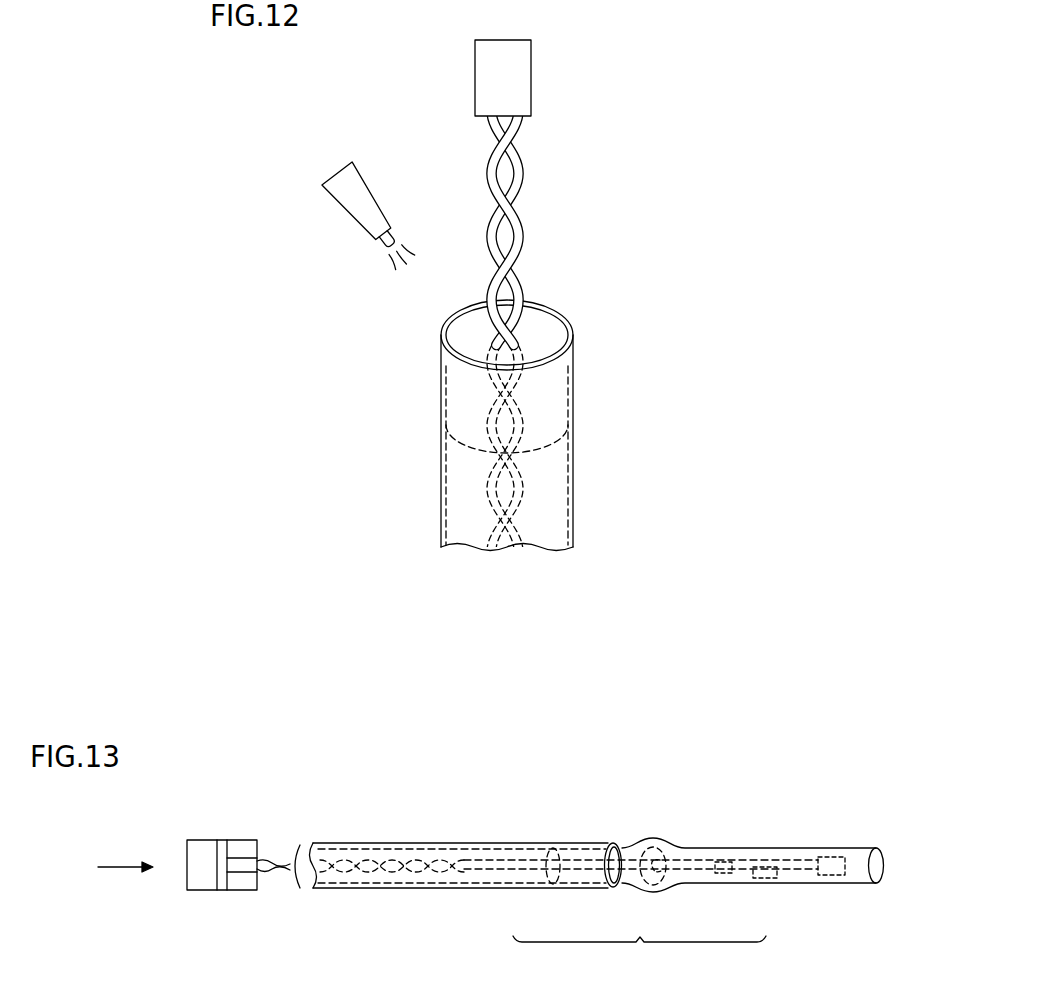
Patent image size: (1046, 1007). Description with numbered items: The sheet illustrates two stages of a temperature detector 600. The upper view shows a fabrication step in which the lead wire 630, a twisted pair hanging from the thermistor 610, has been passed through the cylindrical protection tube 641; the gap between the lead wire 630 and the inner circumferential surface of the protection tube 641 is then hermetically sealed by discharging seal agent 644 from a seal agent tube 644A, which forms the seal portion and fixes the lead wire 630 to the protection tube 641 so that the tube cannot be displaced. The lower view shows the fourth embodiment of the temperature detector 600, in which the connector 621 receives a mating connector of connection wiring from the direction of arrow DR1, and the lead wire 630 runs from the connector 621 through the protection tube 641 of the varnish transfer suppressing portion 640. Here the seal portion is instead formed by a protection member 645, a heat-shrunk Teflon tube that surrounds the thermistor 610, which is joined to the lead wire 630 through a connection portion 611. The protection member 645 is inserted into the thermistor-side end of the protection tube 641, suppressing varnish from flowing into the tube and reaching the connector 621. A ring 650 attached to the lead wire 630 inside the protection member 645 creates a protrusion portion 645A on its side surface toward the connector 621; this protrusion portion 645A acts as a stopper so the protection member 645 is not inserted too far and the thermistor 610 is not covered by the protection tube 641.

In FIG. 13, the temperature detector 600 is at (795, 785).
In FIG. 12, the thermistor 610 is at (514, 78).
In FIG. 13, the thermistor 610 is at (767, 866).
In FIG. 13, the connection portion 611 is at (725, 862).
In FIG. 13, the connector 621 is at (200, 880).
In FIG. 12, the lead wire 630 is at (515, 178).
In FIG. 13, the lead wire 630 is at (427, 862).
In FIG. 13, the varnish transfer suppressing portion 640 is at (639, 954).
In FIG. 12, the protection tube 641 is at (550, 487).
In FIG. 13, the protection tube 641 is at (545, 886).
In FIG. 12, the seal agent 644 is at (532, 325).
In FIG. 12, the seal agent tube 644A is at (362, 207).
In FIG. 13, the protection member 645 is at (733, 884).
In FIG. 13, the protrusion portion 645A is at (652, 838).
In FIG. 13, the ring 650 is at (607, 845).
In FIG. 13, the arrow direction DR1 is at (118, 871).